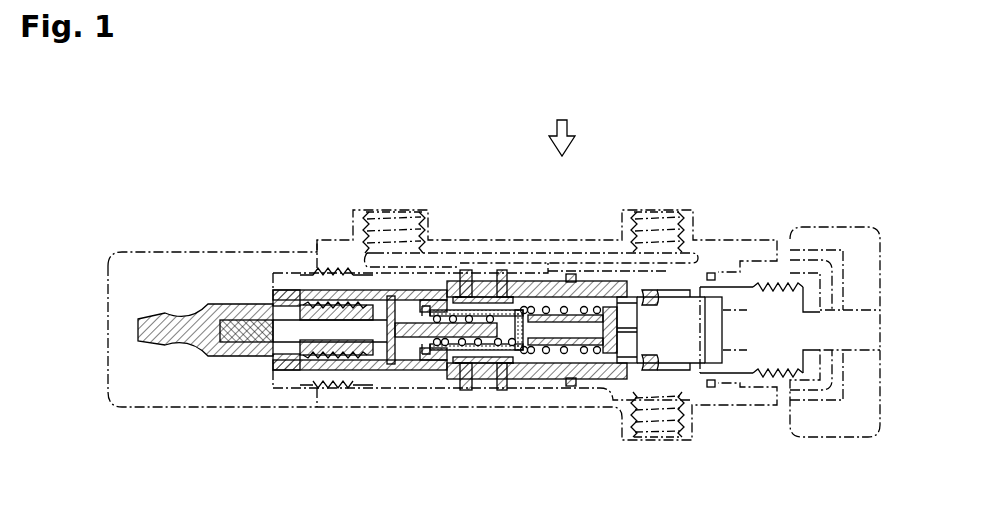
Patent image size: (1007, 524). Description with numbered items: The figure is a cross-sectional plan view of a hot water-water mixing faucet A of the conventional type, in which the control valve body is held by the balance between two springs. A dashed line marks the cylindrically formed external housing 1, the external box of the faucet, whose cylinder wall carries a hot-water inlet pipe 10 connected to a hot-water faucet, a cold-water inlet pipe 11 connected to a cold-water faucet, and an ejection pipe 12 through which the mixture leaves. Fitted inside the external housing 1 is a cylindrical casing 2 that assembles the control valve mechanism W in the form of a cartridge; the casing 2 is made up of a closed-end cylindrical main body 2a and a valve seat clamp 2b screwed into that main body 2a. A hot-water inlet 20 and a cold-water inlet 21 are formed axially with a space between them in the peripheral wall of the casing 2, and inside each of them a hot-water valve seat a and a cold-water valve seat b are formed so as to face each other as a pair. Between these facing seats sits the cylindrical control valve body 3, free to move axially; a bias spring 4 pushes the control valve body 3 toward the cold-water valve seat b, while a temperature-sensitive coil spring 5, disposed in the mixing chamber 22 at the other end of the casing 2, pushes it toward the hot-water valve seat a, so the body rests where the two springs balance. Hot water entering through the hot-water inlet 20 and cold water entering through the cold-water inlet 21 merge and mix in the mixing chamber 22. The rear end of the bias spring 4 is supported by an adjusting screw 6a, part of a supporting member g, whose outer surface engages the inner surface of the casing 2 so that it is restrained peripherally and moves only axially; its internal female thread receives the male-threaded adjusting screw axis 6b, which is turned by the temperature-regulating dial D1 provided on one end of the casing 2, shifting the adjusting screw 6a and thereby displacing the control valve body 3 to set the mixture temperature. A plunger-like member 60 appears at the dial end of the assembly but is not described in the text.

The external housing 1 is at (758, 240).
The temperature-regulating dial D1 is at (177, 250).
The casing 2 is at (572, 280).
The cylindrical main body 2a is at (335, 384).
The valve seat clamp 2b is at (598, 283).
The control valve body 3 is at (502, 358).
The bias spring 4 is at (443, 342).
The temperature-sensitive coil spring 5 is at (577, 352).
The adjusting screw 6a is at (348, 303).
The adjusting screw axis 6b is at (333, 312).
The hot-water inlet pipe 10 is at (682, 208).
The cold-water inlet pipe 11 is at (362, 208).
The ejection pipe 12 is at (683, 441).
The hot-water inlet 20 is at (470, 280).
The cold-water inlet 21 is at (499, 278).
The mixing chamber 22 is at (548, 352).
The plunger 60 is at (248, 332).
The hot-water valve seat a is at (462, 278).
The cold-water valve seat b is at (507, 280).
The supporting member g is at (388, 365).
The control valve mechanism W is at (467, 332).
The hot water-water mixing faucet A is at (562, 125).